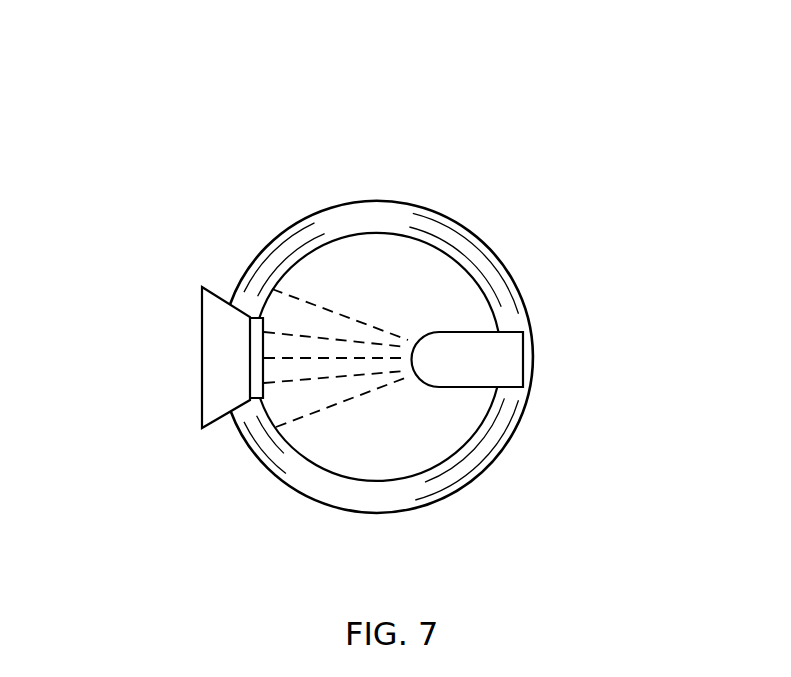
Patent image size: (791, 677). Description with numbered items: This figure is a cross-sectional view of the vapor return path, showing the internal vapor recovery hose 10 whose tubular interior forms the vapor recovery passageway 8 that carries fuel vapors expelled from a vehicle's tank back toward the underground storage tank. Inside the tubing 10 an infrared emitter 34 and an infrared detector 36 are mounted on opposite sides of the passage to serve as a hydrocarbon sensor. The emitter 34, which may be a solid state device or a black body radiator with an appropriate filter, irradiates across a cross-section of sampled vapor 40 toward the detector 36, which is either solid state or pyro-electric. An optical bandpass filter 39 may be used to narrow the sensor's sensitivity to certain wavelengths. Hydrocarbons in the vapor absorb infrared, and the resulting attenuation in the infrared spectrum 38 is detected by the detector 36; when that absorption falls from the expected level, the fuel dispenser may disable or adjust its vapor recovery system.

The vapor recovery passageway 8 is at (352, 442).
The vapor recovery hose 10 is at (362, 498).
The infrared emitter 34 is at (490, 357).
The infrared detector 36 is at (220, 343).
The infrared spectrum 38 is at (330, 308).
The optical bandpass filter 39 is at (336, 310).
The sampled vapor 40 is at (323, 445).